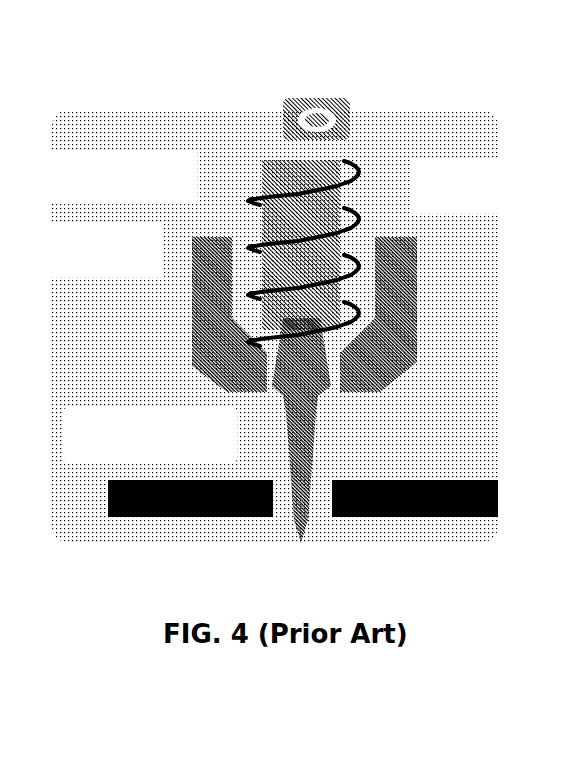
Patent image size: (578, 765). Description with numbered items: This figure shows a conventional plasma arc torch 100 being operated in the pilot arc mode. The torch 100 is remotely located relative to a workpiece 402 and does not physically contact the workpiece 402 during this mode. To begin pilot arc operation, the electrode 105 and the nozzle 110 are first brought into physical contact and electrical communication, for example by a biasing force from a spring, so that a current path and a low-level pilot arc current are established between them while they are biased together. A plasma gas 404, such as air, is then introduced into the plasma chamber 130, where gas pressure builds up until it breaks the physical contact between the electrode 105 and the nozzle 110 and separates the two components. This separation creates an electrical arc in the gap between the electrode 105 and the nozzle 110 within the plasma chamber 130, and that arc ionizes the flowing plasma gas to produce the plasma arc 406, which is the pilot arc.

The plasma arc torch 100 is at (208, 136).
The electrode 105 is at (413, 178).
The nozzle 110 is at (217, 245).
The plasma chamber 130 is at (252, 316).
The workpiece 402 is at (175, 503).
The plasma gas 404 is at (351, 183).
The plasma arc 406 is at (307, 430).